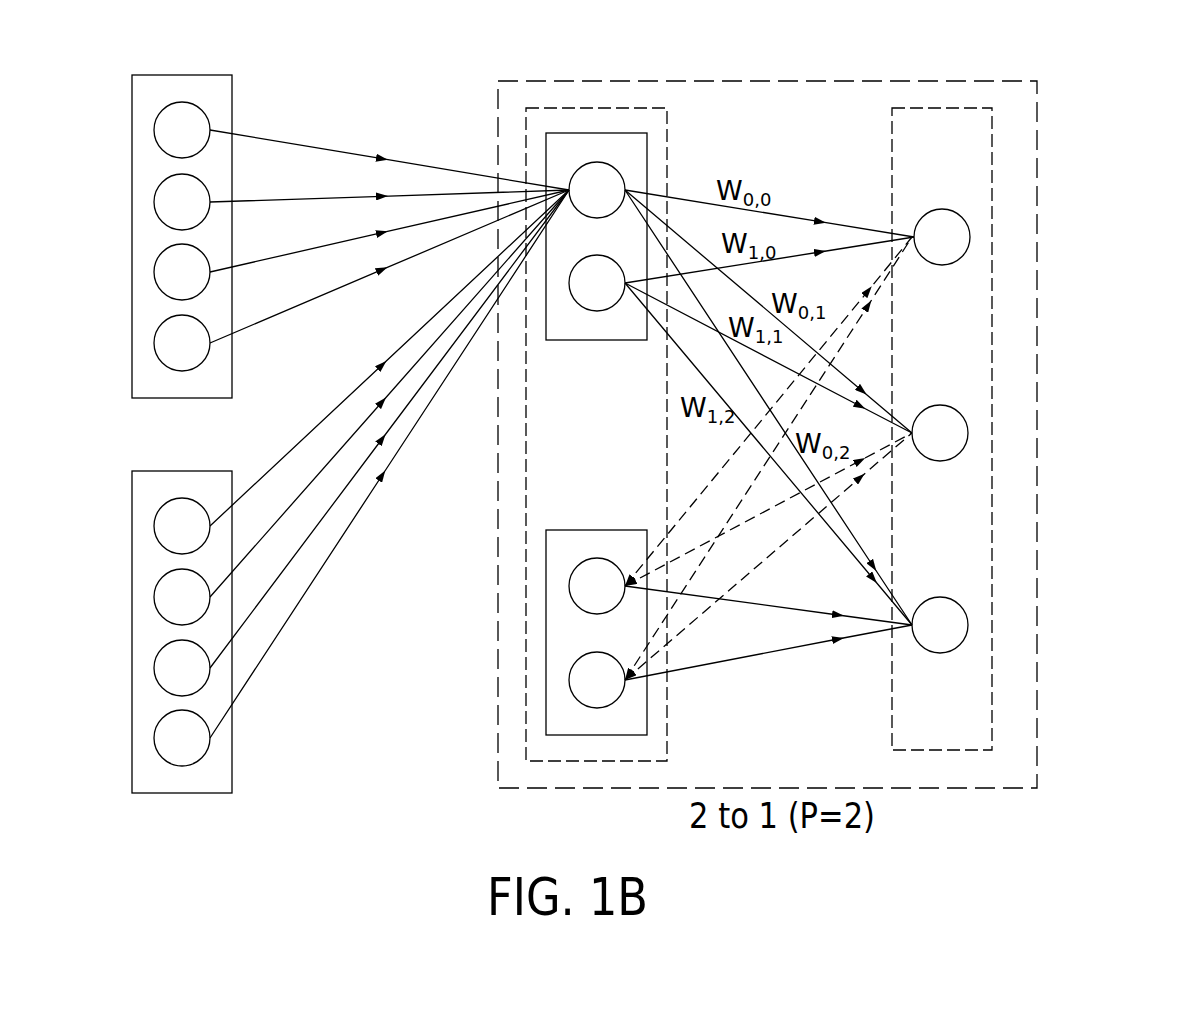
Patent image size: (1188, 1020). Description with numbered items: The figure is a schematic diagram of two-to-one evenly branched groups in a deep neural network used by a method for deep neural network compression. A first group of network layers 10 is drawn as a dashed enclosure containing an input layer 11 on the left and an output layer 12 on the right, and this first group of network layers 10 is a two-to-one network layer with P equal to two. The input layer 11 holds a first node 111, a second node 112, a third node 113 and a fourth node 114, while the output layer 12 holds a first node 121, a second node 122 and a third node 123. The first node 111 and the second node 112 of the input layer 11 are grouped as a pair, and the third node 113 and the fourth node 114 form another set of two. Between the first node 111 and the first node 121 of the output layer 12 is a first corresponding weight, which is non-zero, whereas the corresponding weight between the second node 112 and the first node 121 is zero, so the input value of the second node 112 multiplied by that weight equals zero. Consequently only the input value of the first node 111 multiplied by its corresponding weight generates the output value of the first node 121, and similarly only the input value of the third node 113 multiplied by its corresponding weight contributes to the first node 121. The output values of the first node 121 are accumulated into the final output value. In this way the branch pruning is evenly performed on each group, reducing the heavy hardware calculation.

The first group of network layers 10 is at (1040, 143).
The input layer 11 is at (577, 107).
The output layer 12 is at (966, 107).
The first node of the input layer 111 is at (573, 170).
The second node of the input layer 112 is at (573, 302).
The third node of the input layer 113 is at (568, 586).
The fourth node of the input layer 114 is at (568, 680).
The first node of the output layer 121 is at (971, 237).
The second node of the output layer 122 is at (969, 433).
The third node of the output layer 123 is at (969, 625).